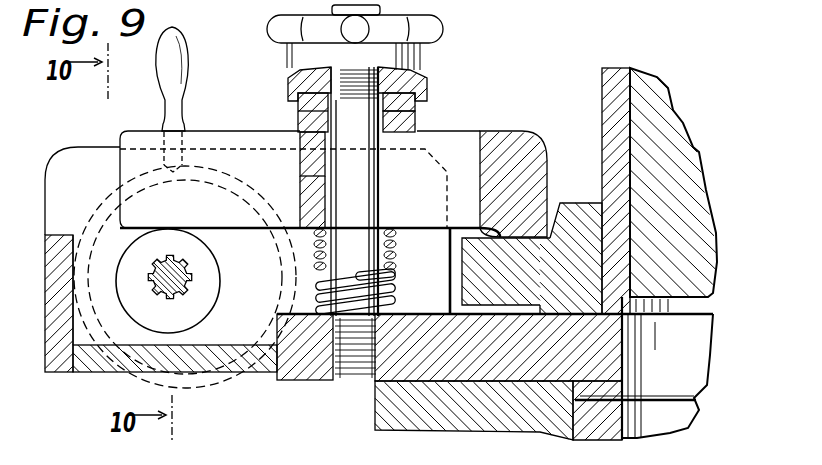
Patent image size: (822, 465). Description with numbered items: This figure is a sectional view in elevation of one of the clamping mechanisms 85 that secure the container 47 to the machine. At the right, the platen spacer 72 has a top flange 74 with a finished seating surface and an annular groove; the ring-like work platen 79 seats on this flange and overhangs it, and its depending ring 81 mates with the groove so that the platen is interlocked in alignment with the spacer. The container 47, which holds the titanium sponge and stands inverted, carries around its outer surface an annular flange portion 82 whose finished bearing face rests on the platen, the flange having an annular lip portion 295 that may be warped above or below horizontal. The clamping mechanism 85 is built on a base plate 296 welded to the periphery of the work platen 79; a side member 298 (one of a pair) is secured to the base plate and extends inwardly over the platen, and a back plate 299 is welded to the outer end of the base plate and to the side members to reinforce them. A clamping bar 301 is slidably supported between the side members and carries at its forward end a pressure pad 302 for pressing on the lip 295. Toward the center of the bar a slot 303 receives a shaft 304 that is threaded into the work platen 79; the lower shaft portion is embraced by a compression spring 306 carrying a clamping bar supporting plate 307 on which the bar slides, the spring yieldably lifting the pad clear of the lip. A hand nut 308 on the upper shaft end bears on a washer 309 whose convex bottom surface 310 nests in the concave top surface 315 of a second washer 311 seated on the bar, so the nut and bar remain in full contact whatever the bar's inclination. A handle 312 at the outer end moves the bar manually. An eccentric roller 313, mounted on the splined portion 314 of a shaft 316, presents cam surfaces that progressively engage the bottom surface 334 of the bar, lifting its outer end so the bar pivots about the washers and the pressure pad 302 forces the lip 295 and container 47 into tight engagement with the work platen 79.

The container 47 is at (612, 108).
The platen spacer 72 is at (593, 432).
The top flange 74 is at (387, 403).
The work platen 79 is at (508, 372).
The depending ring 81 is at (585, 397).
The flange portion 82 is at (573, 220).
The clamping mechanism 85 is at (92, 395).
The annular lip portion 295 is at (497, 275).
The base plate 296 is at (253, 368).
The side member 298 is at (72, 172).
The back plate 299 is at (53, 258).
The clamping bar 301 is at (232, 109).
The pressure pad 302 is at (510, 237).
The slot 303 is at (465, 152).
The shaft 304 is at (357, 191).
The compression spring 306 is at (406, 263).
The clamping bar supporting plate 307 is at (319, 252).
The hand nut 308 is at (403, 50).
The washer 309 is at (425, 98).
The convex bottom surface 310 is at (299, 123).
The washer 311 is at (416, 124).
The handle 312 is at (177, 60).
The eccentric roller 313 is at (117, 278).
The splined portion 314 is at (184, 270).
The concave top surface 315 is at (416, 105).
The shaft 316 is at (160, 297).
The bottom surface 334 is at (302, 215).